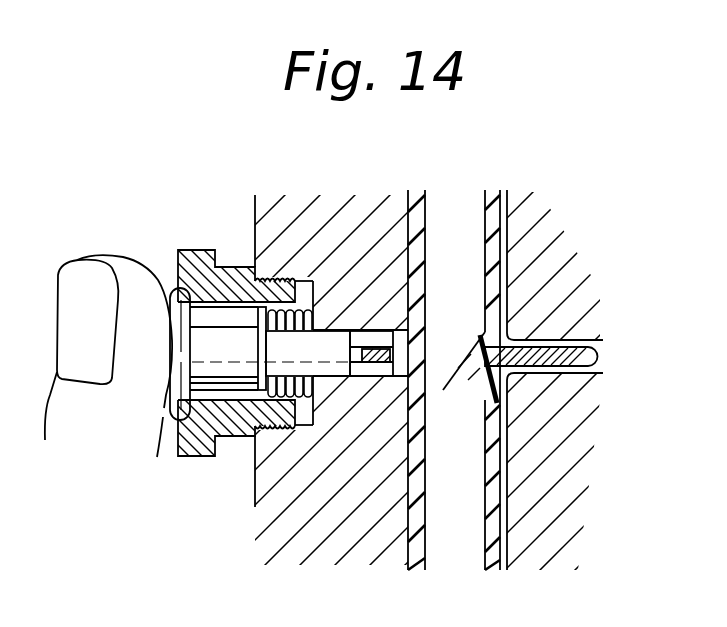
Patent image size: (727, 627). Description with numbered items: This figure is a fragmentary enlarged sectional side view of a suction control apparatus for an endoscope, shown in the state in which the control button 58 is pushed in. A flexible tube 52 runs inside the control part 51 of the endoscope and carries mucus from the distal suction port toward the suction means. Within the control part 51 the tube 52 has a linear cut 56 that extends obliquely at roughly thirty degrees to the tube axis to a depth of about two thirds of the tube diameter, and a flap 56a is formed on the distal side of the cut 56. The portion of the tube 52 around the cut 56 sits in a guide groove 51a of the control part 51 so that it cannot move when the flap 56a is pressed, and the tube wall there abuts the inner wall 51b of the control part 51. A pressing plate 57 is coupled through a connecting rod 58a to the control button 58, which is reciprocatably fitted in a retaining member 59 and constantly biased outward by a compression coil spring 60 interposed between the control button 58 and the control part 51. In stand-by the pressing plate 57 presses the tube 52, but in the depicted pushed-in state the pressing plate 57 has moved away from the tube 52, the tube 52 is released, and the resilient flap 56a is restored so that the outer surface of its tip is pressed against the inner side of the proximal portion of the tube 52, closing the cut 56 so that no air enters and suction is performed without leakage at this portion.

The control part 51 is at (277, 488).
The guide groove 51a is at (503, 260).
The inner wall 51b is at (428, 375).
The flexible tube 52 is at (407, 515).
The linear cut 56 is at (482, 377).
The flap 56a is at (508, 328).
The pressing plate 57 is at (597, 362).
The control button 58 is at (234, 325).
The connecting rod 58a is at (345, 342).
The retaining member 59 is at (178, 455).
The compression coil spring 60 is at (265, 392).